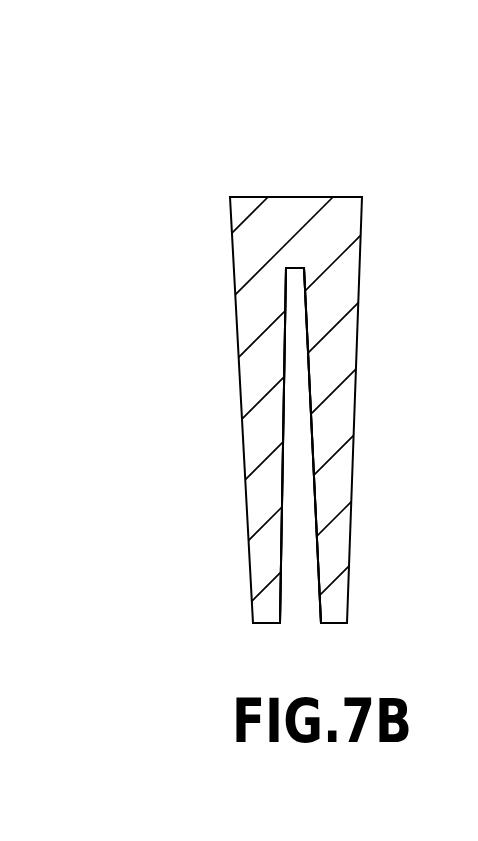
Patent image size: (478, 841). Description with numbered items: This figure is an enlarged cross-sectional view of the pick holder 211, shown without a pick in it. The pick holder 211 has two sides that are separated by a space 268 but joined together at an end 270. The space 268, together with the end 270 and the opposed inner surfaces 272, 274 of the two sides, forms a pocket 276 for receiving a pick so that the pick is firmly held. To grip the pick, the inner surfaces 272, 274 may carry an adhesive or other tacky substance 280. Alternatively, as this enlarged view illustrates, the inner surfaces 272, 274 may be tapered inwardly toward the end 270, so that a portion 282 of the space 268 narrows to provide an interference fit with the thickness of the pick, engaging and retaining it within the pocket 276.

The pick holder 211 is at (290, 123).
The end 270 is at (295, 228).
The adhesive or other tacky substance 280 is at (284, 362).
The portion of space 282 is at (284, 346).
The space 268 is at (212, 394).
The inner surface 274 is at (285, 414).
The inner surface 272 is at (312, 470).
The pocket 276 is at (300, 578).